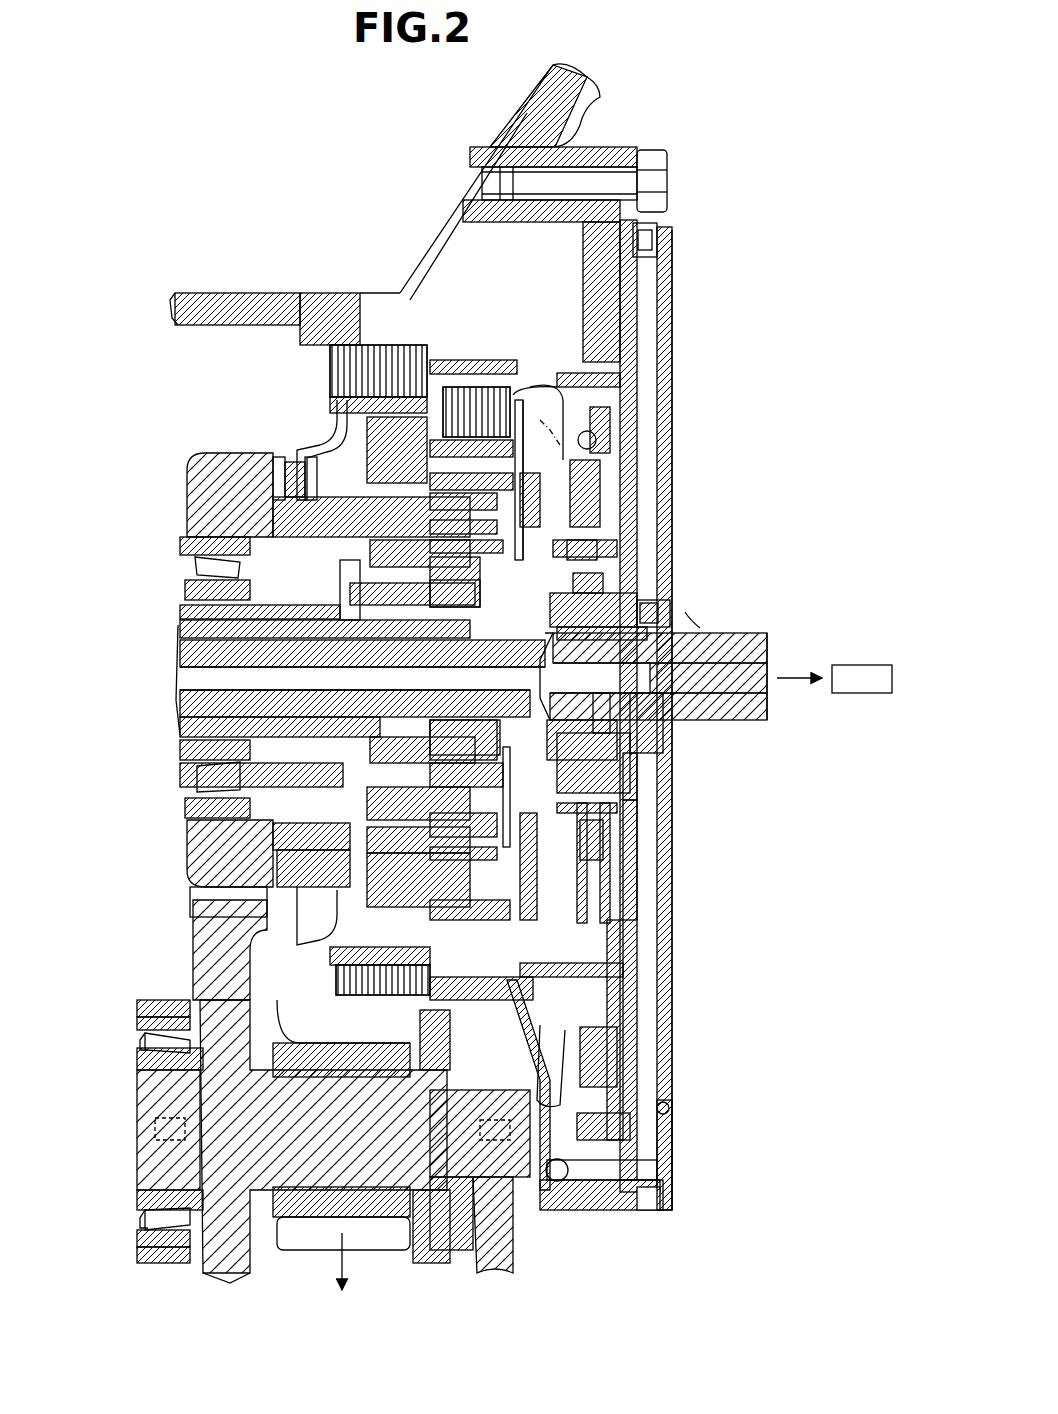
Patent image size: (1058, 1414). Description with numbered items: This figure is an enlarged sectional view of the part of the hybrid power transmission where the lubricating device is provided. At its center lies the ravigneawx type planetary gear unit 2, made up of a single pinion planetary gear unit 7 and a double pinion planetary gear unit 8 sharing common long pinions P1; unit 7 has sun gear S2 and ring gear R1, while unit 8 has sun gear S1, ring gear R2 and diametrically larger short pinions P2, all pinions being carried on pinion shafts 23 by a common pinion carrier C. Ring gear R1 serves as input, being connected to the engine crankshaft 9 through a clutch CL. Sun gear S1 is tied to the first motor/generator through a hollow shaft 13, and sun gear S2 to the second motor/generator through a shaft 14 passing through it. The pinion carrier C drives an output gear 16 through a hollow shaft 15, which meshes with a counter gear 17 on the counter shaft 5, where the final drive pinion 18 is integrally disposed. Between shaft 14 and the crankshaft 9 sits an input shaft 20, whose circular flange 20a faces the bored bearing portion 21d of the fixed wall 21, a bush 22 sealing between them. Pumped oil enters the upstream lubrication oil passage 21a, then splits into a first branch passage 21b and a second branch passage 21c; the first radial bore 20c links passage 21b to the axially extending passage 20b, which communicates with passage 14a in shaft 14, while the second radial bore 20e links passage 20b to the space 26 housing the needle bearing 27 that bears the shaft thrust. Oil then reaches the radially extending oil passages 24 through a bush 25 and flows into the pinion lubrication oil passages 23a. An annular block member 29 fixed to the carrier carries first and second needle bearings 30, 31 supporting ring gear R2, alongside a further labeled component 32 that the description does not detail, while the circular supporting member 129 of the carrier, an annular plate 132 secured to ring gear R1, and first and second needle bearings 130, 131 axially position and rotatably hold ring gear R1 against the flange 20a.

The ravigneawx type planetary gear unit 2 is at (258, 1136).
The counter shaft 5 is at (500, 1160).
The single pinion planetary gear unit 7 is at (350, 1120).
The double pinion planetary gear unit 8 is at (300, 1070).
The engine crankshaft 9 is at (853, 693).
The hollow shaft 13 is at (312, 650).
The shaft 14 is at (275, 655).
The axially extending passage 14a is at (245, 688).
The hollow shaft 15 is at (220, 545).
The output gear 16 is at (215, 510).
The counter gear 17 is at (212, 948).
The final drive pinion 18 is at (290, 1000).
The input shaft 20 is at (690, 626).
The circular flange 20a is at (655, 592).
The axially extending passage 20b is at (745, 668).
The first radial bore 20c is at (640, 712).
The second radial bore 20e is at (660, 700).
The fixed wall 21 is at (690, 1200).
The upstream lubrication oil passage 21a is at (668, 1112).
The first branch passage 21b is at (677, 763).
The second branch passage 21c is at (640, 800).
The bored bearing portion 21d is at (645, 622).
The bush 22 is at (660, 622).
The pinion shaft 23 is at (365, 650).
The pinion lubrication oil passage 23a is at (420, 445).
The radially extending oil passage 24 is at (620, 560).
The bush 25 is at (610, 608).
The space 26 is at (605, 830).
The needle bearing 27 is at (585, 800).
The annular block member 29 is at (380, 545).
The first needle bearing 30 is at (290, 492).
The second needle bearing 31 is at (278, 470).
The carrier plate 32 is at (332, 445).
The circular supporting member 129 is at (620, 475).
The first needle bearing 130 is at (620, 505).
The second needle bearing 131 is at (630, 535).
The annular plate 132 is at (600, 440).
The pinion carrier C is at (560, 425).
The clutch CL is at (480, 405).
The long pinion P1 is at (400, 990).
The short pinion P2 is at (390, 510).
The ring gear R1 is at (600, 385).
The ring gear R2 is at (380, 440).
The sun gear S1 is at (420, 740).
The sun gear S2 is at (560, 470).